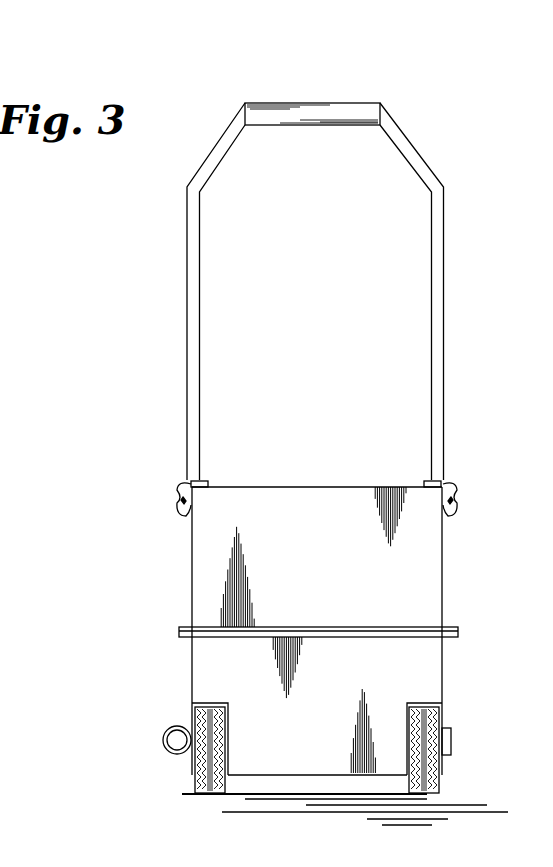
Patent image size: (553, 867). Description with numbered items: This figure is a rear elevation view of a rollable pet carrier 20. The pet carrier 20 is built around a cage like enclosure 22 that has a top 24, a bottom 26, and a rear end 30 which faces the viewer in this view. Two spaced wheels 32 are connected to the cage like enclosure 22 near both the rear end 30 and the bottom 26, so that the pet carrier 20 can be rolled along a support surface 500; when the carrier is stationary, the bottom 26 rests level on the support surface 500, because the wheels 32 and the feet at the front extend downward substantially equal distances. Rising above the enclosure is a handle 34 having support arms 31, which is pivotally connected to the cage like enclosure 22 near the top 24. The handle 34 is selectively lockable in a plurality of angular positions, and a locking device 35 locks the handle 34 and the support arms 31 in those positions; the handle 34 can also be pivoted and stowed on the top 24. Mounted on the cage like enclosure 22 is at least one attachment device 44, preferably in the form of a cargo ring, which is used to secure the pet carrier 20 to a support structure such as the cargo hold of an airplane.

The rollable pet carrier 20 is at (506, 243).
The cage like enclosure 22 is at (276, 446).
The top 24 is at (318, 488).
The bottom 26 is at (287, 776).
The rear end 30 is at (380, 615).
The support arms 31 is at (190, 345).
The wheels 32 is at (193, 786).
The handle 34 is at (368, 103).
The locking device 35 is at (178, 492).
The attachment device 44 is at (165, 733).
The support surface 500 is at (235, 798).